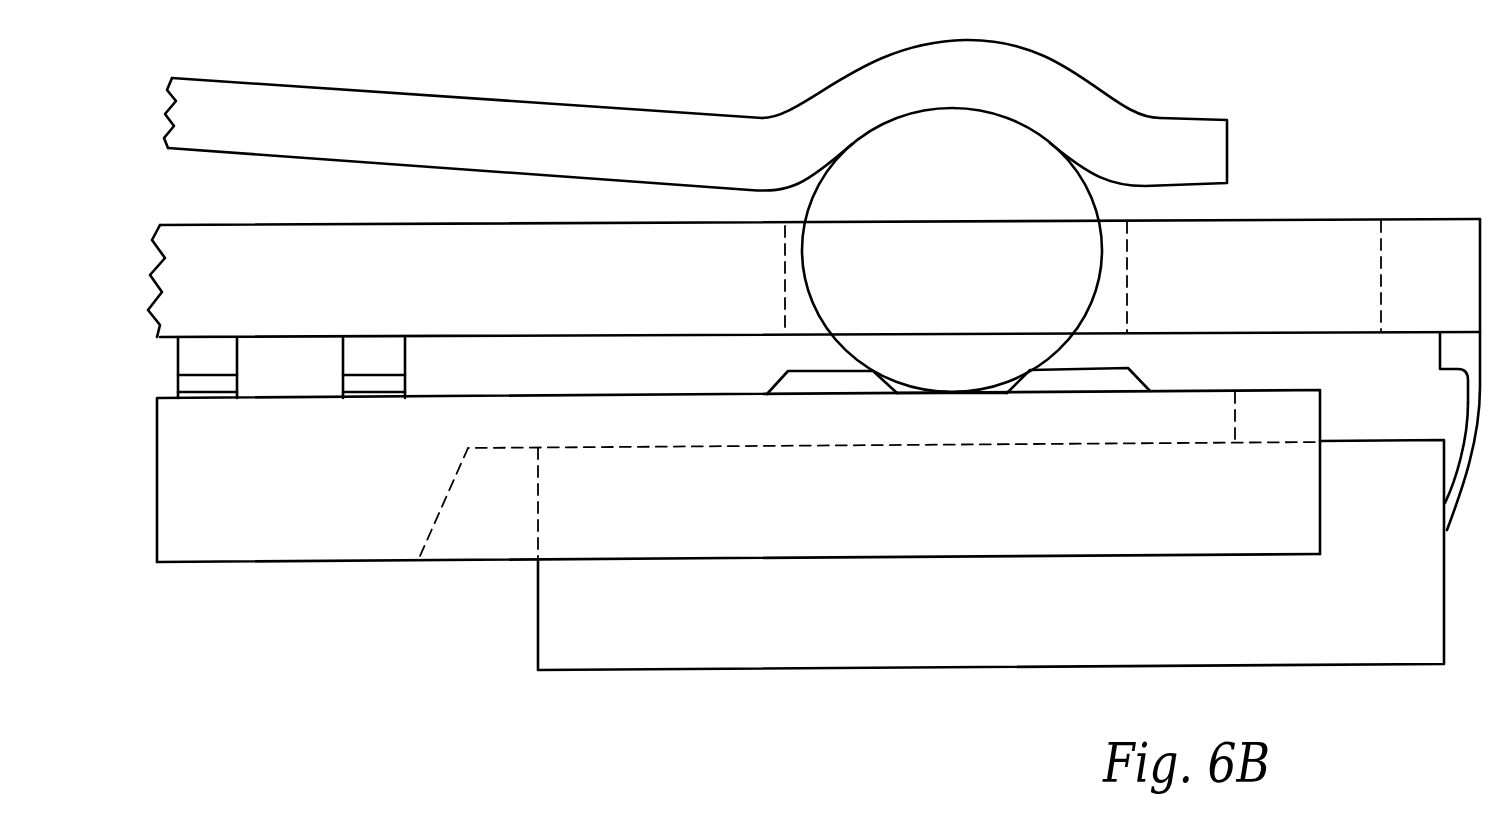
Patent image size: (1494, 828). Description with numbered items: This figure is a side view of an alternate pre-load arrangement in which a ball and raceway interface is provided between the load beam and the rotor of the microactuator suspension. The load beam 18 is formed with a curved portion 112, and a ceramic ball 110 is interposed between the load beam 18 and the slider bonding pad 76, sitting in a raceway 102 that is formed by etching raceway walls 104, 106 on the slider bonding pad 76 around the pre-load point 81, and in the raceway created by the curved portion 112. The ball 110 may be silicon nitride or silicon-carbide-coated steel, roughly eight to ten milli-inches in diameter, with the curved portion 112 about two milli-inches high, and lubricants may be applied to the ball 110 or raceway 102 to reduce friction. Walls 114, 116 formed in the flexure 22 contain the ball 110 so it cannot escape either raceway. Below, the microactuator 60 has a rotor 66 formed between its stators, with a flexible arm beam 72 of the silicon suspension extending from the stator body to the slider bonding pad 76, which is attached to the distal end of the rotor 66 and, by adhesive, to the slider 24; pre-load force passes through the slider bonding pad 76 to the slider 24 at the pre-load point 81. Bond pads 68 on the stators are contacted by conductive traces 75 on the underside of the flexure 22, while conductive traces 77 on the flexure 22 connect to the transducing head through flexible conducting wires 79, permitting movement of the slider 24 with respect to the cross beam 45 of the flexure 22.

The load beam 18 is at (432, 93).
The curved portion 112 is at (1031, 52).
The ceramic ball 110 is at (1093, 193).
The flexure 22 is at (1268, 219).
The cross beam 45 is at (1414, 219).
The conductive traces 77 is at (1440, 351).
The flexible conducting wires 79 is at (1429, 443).
The wall 114 is at (785, 272).
The wall 116 is at (1127, 262).
The conductive traces 75 is at (343, 344).
The bond pads 68 is at (343, 380).
The raceway wall 104 is at (784, 372).
The raceway wall 106 is at (1136, 375).
The raceway 102 is at (950, 392).
The pre-load point 81 is at (962, 394).
The microactuator 60 is at (295, 562).
The flexible arm beam 72 is at (683, 559).
The rotor 66 is at (447, 500).
The slider bonding pad 76 is at (1240, 412).
The slider 24 is at (946, 667).